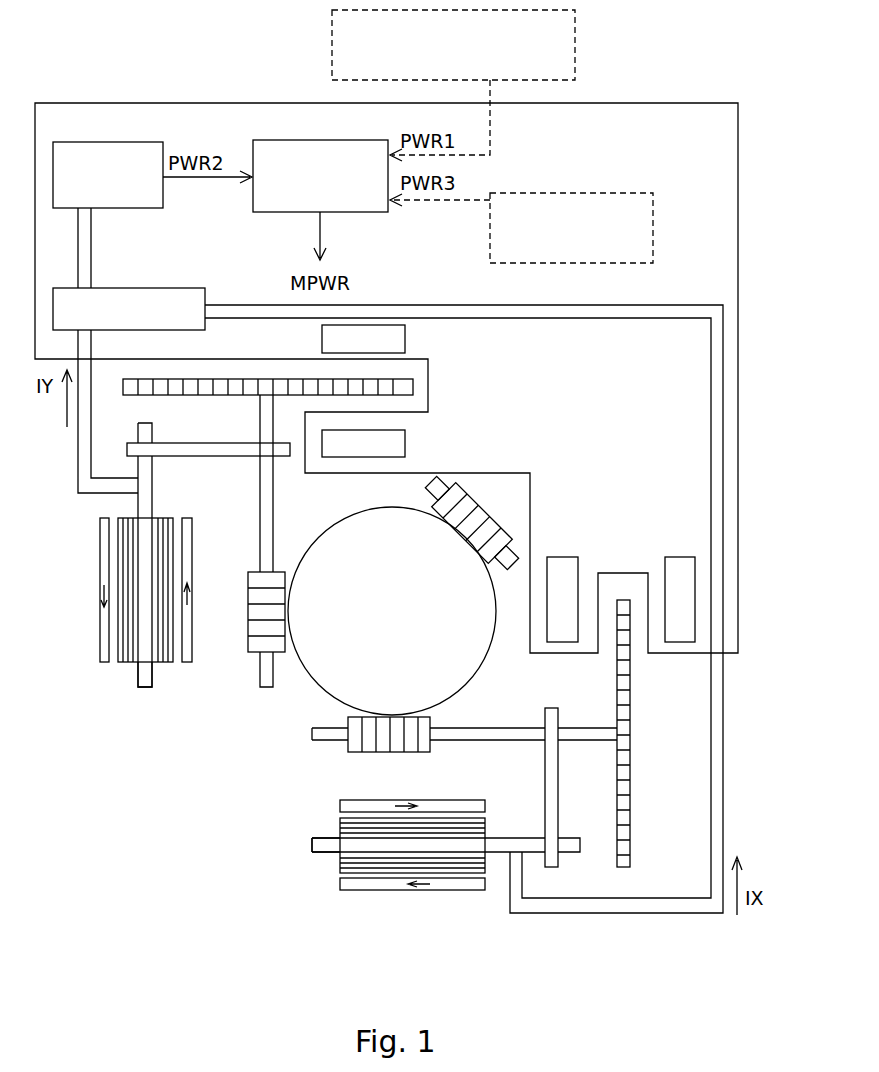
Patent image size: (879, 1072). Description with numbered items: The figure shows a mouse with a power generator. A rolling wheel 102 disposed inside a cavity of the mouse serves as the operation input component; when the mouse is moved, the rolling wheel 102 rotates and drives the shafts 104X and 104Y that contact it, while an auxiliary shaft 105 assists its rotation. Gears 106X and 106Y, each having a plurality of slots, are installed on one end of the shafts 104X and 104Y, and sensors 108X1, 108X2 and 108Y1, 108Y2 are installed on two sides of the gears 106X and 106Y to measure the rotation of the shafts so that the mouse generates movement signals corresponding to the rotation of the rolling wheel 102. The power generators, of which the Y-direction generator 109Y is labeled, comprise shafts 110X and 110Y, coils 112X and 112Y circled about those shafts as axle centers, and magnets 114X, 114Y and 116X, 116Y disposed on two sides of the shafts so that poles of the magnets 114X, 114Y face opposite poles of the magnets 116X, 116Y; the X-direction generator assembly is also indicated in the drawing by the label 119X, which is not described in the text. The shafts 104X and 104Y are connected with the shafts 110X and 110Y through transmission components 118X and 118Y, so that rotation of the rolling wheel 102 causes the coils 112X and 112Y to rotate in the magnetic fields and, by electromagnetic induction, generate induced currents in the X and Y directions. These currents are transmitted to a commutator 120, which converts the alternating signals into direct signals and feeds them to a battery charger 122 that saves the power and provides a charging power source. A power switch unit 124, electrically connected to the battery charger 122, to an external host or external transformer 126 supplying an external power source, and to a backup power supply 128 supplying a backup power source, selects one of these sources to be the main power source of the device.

The rolling wheel 102 is at (320, 673).
The shaft 104X is at (322, 740).
The shaft 104Y is at (265, 688).
The auxiliary shaft 105 is at (507, 567).
The gear 106X is at (632, 853).
The gear 106Y is at (130, 392).
The sensor 108X1 is at (558, 557).
The sensor 108X2 is at (676, 557).
The sensor 108Y1 is at (405, 338).
The sensor 108Y2 is at (405, 443).
The power generator 109Y is at (139, 651).
The shaft 110X is at (322, 850).
The shaft 110Y is at (143, 690).
The coil 112X is at (427, 873).
The coil 112Y is at (125, 636).
The magnet 114X is at (447, 807).
The magnet 114Y is at (105, 533).
The magnet 116X is at (363, 890).
The magnet 116Y is at (190, 612).
The transmission component 118X is at (555, 787).
The transmission component 118Y is at (130, 453).
The X linear motor assembly 119X is at (350, 870).
The commutator 120 is at (130, 288).
The battery charger 122 is at (105, 142).
The power switch unit 124 is at (305, 140).
The external transformer 126 is at (577, 45).
The backup power supply 128 is at (577, 193).